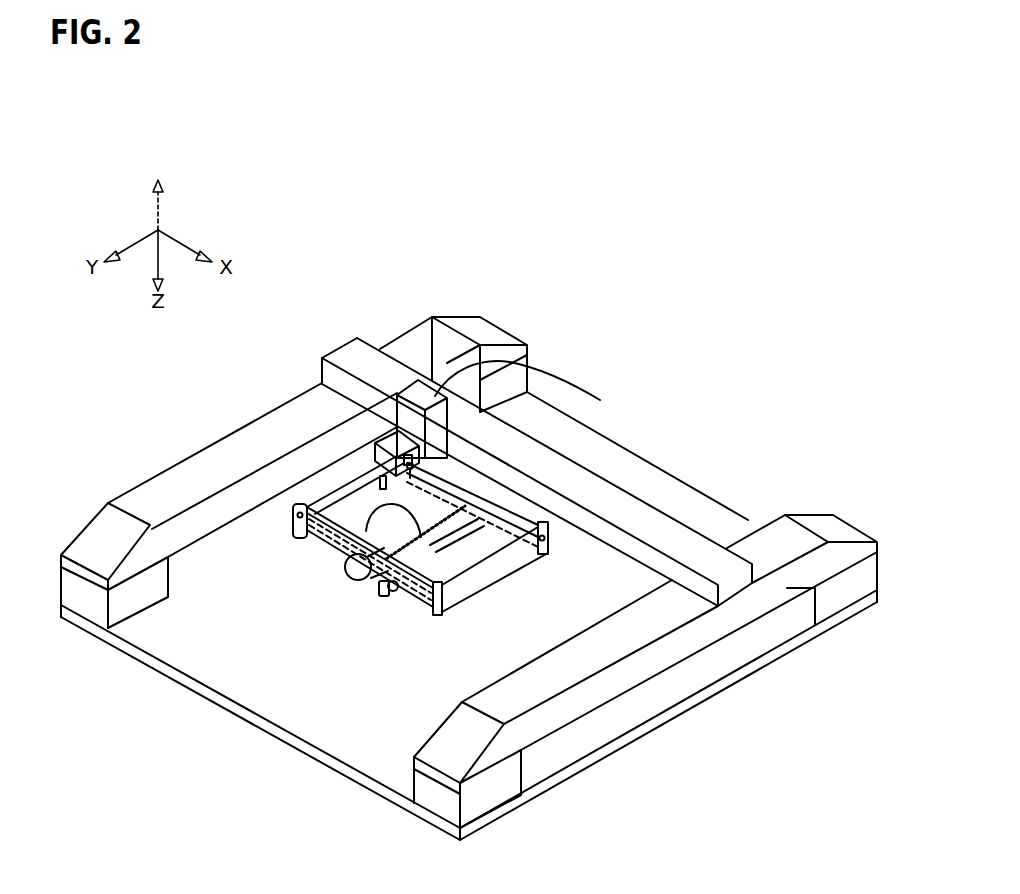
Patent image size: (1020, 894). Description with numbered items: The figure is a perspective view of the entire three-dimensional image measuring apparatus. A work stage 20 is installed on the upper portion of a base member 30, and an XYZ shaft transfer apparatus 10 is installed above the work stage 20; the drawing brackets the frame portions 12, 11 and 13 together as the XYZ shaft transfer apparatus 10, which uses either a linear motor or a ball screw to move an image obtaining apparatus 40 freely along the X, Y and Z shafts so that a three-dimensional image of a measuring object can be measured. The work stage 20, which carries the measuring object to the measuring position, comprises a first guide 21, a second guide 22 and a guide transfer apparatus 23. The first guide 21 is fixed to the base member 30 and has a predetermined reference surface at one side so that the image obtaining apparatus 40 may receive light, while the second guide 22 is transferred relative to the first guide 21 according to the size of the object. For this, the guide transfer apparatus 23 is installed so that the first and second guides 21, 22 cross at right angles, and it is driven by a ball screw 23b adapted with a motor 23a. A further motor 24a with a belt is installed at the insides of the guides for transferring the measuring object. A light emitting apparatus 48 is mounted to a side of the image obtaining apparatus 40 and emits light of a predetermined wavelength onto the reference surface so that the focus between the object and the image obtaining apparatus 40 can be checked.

The XYZ shaft transfer apparatus 10 is at (469, 560).
The cross beam 11 is at (622, 500).
The left rail support 12 is at (560, 398).
The right rail support 13 is at (780, 533).
The work stage 20 is at (354, 587).
The first guide 21 is at (447, 596).
The second guide 22 is at (540, 538).
The guide transfer apparatus 23 is at (312, 611).
The motor 23a is at (345, 560).
The ball screw 23b is at (317, 540).
The motor 24a is at (392, 591).
The base member 30 is at (97, 604).
The image obtaining apparatus 40 is at (316, 431).
The light emitting apparatus 48 is at (380, 468).